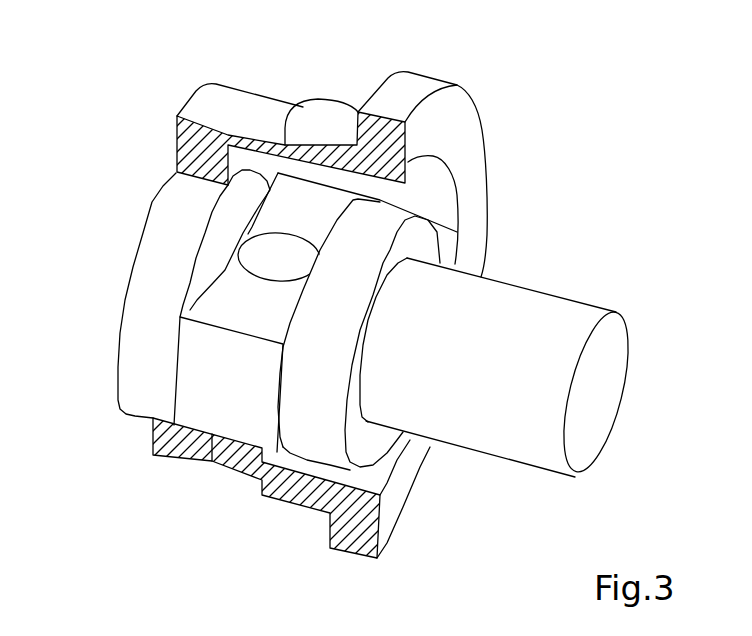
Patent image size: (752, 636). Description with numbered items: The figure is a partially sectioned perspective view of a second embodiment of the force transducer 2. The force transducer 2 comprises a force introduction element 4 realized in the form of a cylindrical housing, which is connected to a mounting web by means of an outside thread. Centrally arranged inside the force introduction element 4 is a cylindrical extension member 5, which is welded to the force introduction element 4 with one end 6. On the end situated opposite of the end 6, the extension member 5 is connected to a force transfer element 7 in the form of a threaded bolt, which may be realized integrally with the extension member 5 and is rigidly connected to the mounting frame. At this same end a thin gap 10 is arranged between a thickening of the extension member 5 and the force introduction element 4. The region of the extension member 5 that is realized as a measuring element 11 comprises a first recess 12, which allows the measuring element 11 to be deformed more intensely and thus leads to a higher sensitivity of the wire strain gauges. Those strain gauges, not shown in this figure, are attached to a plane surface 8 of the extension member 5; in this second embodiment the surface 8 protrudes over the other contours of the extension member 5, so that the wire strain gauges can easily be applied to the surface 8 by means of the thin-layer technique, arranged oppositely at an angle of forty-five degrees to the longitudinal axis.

The force transducer 2 is at (538, 223).
The force introduction element 4 is at (320, 148).
The extension member 5 is at (173, 212).
The end 6 is at (180, 155).
The force transfer element 7 is at (503, 437).
The surface 8 is at (198, 403).
The gap 10 is at (432, 190).
The measuring element 11 is at (208, 313).
The first recess 12 is at (250, 262).